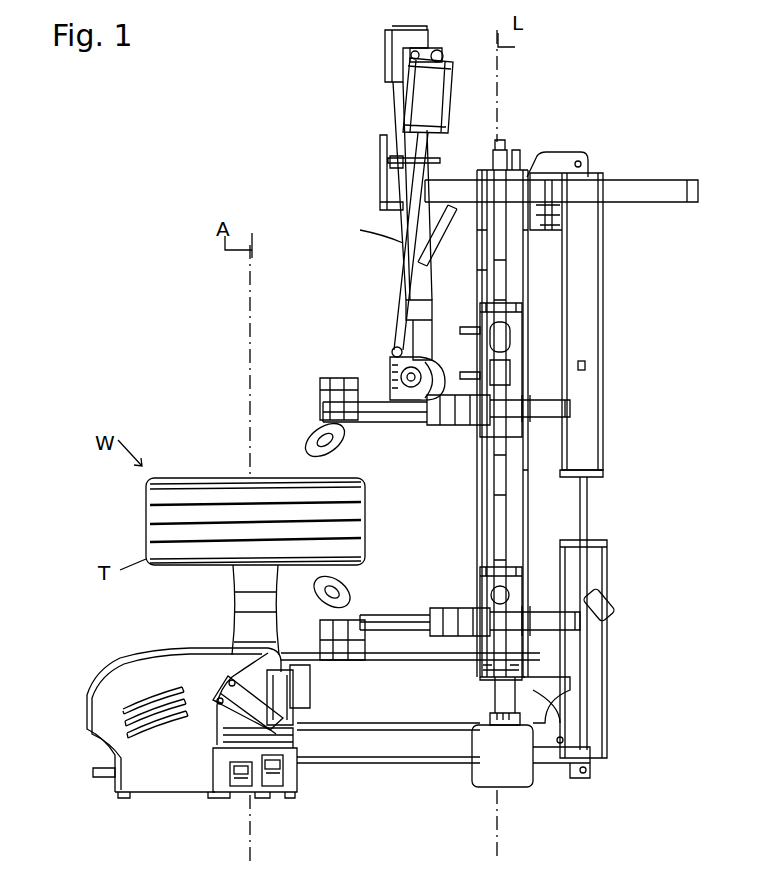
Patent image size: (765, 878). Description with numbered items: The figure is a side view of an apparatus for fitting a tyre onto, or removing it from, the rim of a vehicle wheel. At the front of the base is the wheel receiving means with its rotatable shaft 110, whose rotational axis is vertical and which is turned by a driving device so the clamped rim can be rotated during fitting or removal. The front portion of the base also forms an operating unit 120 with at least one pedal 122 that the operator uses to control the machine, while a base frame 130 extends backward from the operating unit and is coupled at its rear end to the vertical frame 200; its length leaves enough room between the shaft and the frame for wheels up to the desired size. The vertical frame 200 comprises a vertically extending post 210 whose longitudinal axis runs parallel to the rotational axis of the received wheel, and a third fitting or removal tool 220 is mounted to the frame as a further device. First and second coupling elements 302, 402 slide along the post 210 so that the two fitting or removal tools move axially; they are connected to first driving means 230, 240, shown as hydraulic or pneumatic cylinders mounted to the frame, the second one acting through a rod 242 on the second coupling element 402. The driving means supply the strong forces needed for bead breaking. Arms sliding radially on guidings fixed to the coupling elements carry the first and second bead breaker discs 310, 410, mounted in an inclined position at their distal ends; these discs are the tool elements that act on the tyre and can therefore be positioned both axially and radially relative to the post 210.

The rotatable shaft 110 is at (246, 582).
The operating unit 120 is at (110, 690).
The pedal 122 is at (100, 780).
The base frame 130 is at (407, 742).
The vertical frame 200 is at (478, 465).
The vertical post 210 is at (500, 508).
The third fitting or removal tool 220 is at (405, 241).
The first driving means 230 is at (592, 737).
The first driving means 240 is at (595, 383).
The rod 242 is at (590, 503).
The first coupling element 302 is at (515, 331).
The first bead breaker disc 310 is at (315, 443).
The second coupling element 402 is at (487, 588).
The second bead breaker disc 410 is at (350, 590).